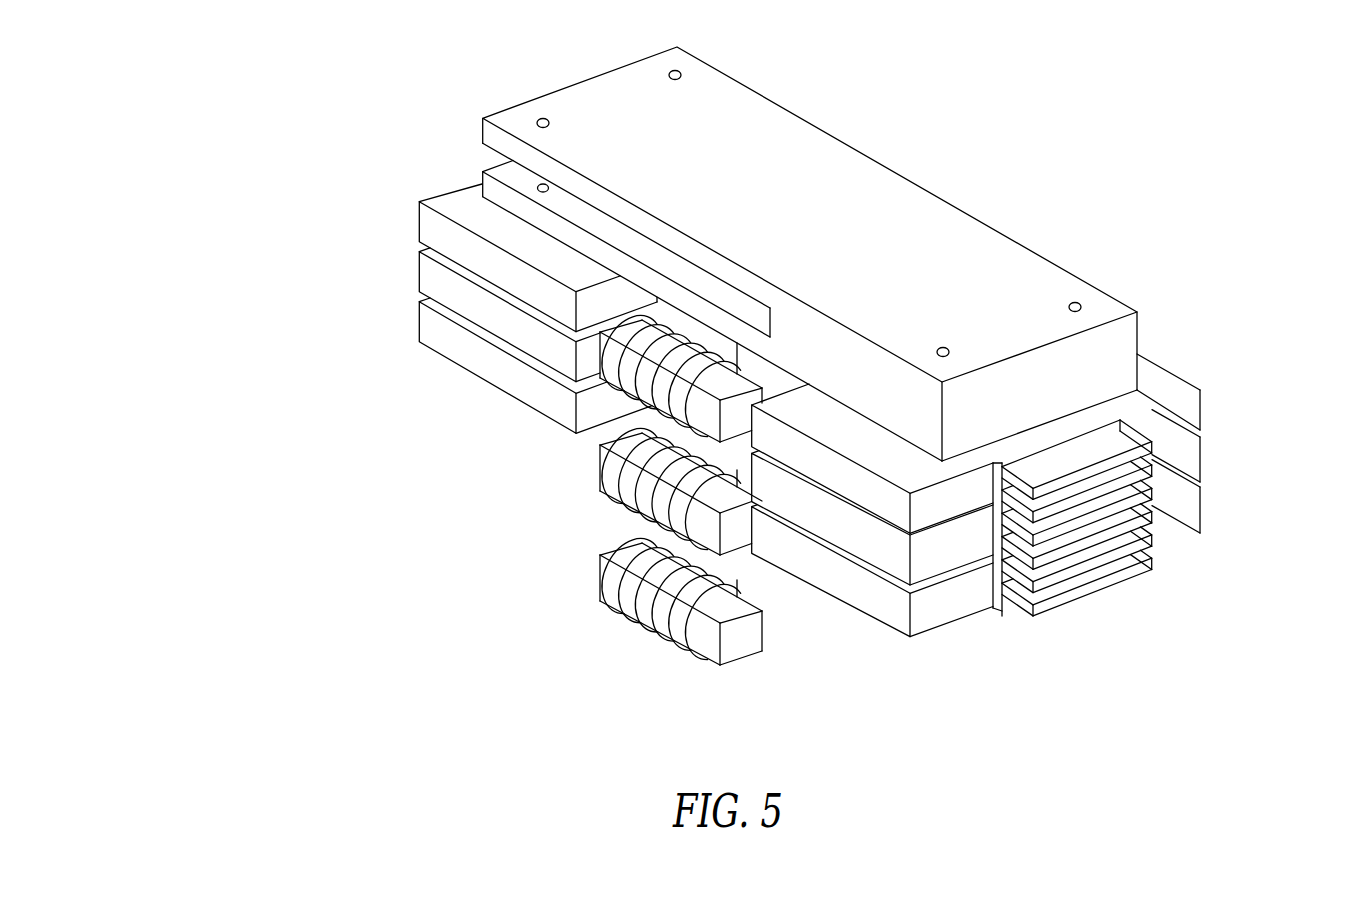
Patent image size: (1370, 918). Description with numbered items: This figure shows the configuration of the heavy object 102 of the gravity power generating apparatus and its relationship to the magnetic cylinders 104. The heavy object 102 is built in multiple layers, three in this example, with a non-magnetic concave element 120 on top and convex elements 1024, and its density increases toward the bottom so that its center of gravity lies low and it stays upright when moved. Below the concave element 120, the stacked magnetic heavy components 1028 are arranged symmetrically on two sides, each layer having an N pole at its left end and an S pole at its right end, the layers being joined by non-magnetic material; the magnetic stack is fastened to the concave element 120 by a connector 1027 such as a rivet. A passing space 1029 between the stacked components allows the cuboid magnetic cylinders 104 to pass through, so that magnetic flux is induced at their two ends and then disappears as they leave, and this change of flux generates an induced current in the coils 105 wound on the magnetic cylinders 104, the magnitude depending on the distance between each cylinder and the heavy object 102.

The heavy object 102 is at (842, 163).
The concave element 120 is at (506, 172).
The connector 1027 is at (541, 186).
The stacked magnetic heavy components 1028 is at (425, 273).
The passing space 1029 is at (627, 425).
The magnetic cylinder 104 is at (753, 642).
The coil 105 is at (620, 612).
The convex element 1024 is at (1087, 590).